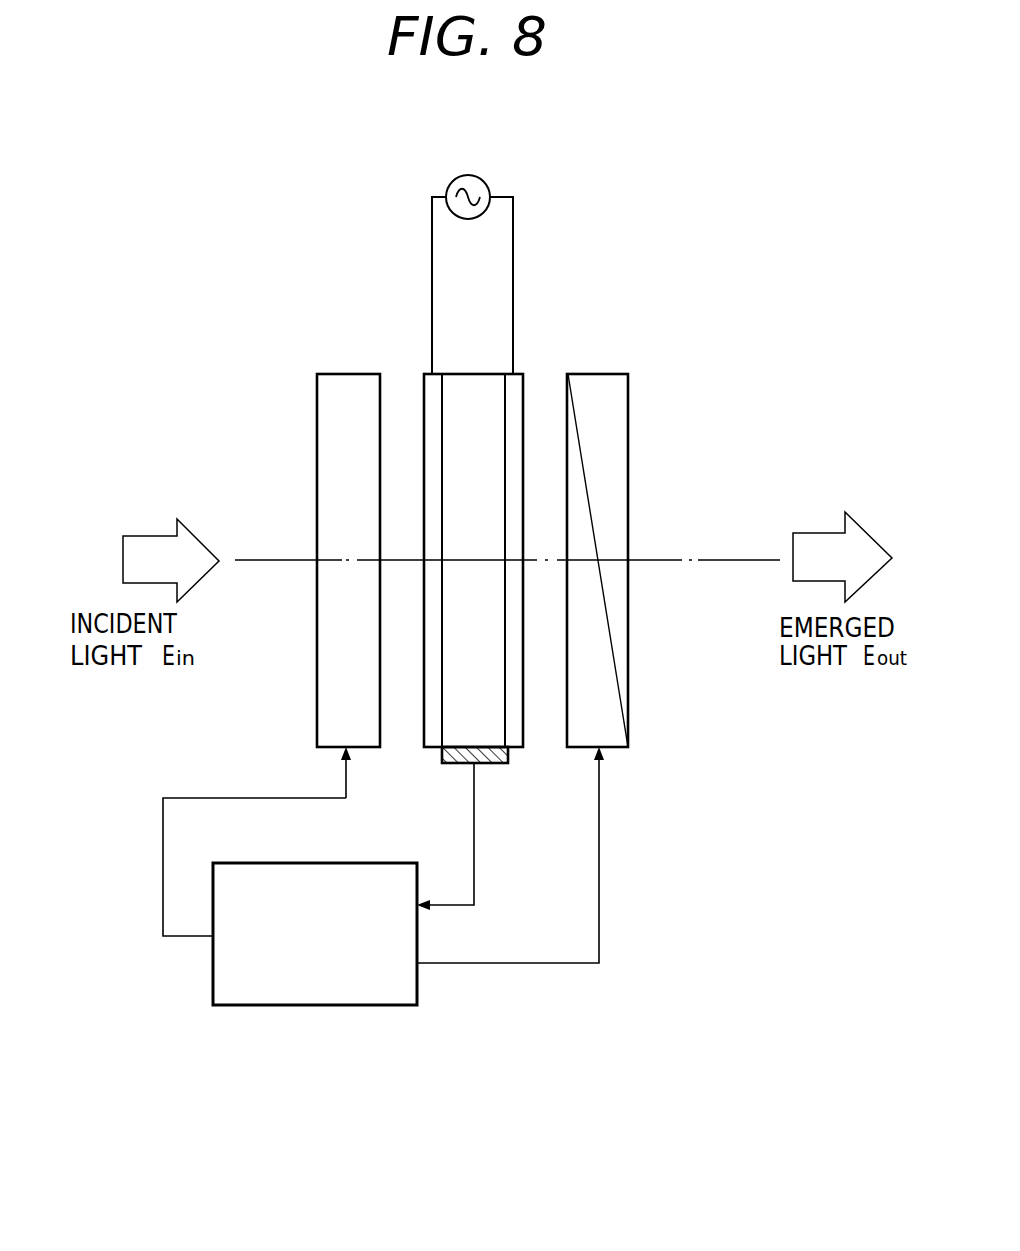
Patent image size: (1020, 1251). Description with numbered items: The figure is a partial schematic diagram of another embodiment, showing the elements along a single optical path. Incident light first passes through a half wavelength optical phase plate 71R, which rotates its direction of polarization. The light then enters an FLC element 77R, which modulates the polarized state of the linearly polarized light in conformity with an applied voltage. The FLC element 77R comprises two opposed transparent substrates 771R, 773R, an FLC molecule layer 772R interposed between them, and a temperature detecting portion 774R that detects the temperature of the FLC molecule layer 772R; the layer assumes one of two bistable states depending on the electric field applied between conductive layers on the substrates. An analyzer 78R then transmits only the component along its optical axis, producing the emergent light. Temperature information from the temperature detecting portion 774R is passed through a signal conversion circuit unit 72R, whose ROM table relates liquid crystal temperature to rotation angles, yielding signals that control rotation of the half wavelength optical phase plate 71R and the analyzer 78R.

The half wavelength optical phase plate 71R is at (337, 374).
The signal conversion circuit unit 72R is at (395, 1007).
The FLC element 77R is at (512, 167).
The transparent substrate 771R is at (430, 750).
The FLC molecule layer 772R is at (483, 373).
The transparent substrate 773R is at (517, 750).
The temperature detecting portion 774R is at (490, 765).
The analyzer 78R is at (605, 372).